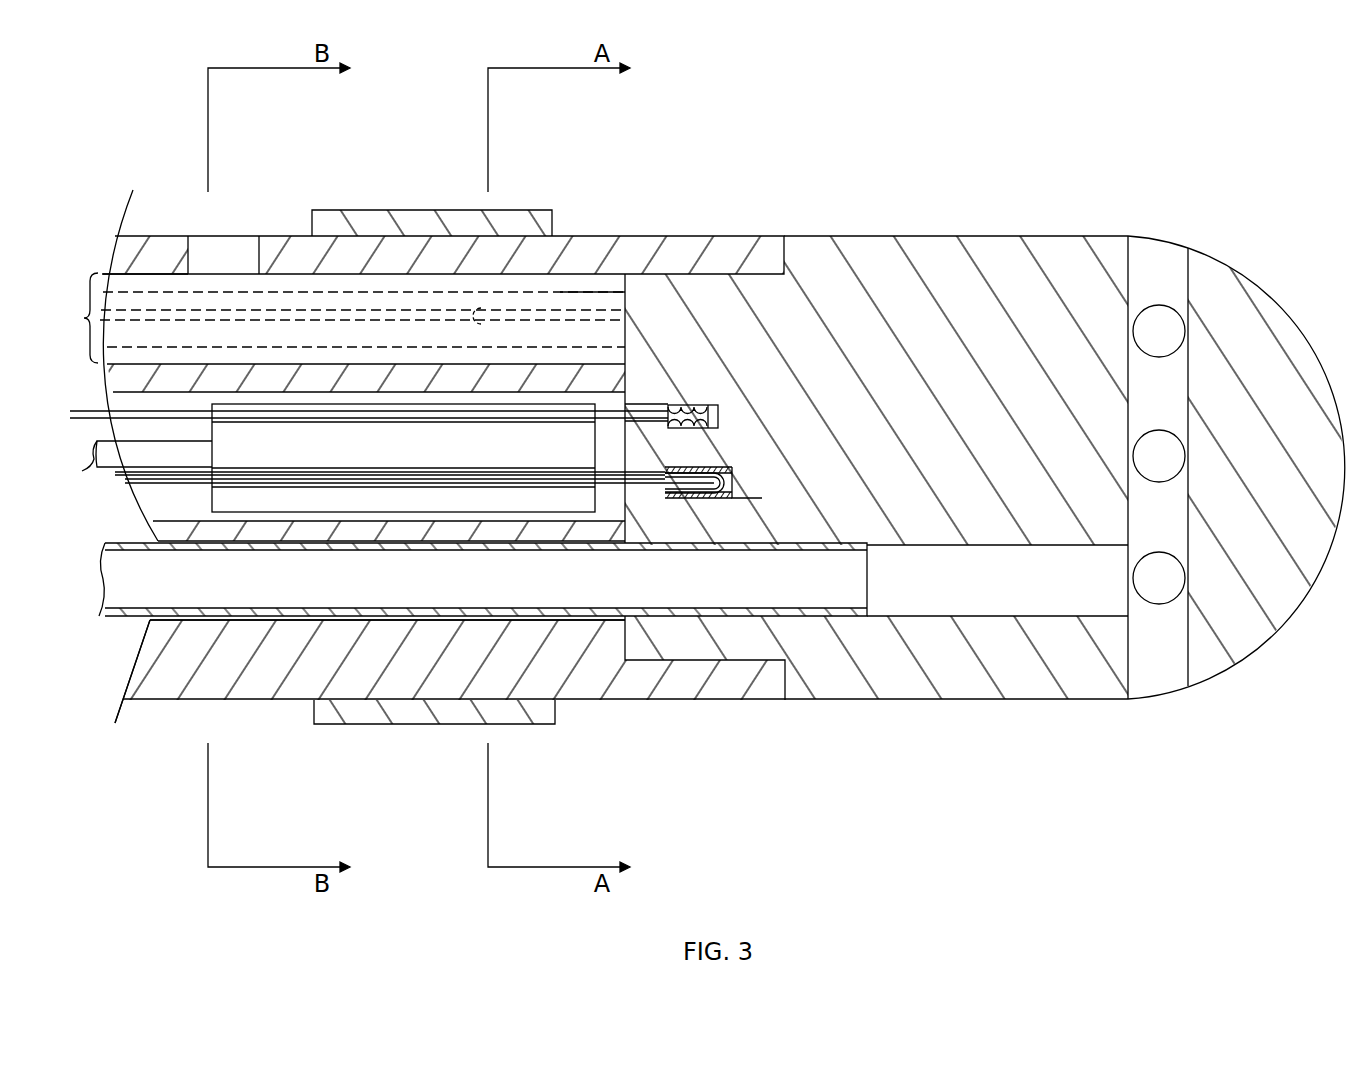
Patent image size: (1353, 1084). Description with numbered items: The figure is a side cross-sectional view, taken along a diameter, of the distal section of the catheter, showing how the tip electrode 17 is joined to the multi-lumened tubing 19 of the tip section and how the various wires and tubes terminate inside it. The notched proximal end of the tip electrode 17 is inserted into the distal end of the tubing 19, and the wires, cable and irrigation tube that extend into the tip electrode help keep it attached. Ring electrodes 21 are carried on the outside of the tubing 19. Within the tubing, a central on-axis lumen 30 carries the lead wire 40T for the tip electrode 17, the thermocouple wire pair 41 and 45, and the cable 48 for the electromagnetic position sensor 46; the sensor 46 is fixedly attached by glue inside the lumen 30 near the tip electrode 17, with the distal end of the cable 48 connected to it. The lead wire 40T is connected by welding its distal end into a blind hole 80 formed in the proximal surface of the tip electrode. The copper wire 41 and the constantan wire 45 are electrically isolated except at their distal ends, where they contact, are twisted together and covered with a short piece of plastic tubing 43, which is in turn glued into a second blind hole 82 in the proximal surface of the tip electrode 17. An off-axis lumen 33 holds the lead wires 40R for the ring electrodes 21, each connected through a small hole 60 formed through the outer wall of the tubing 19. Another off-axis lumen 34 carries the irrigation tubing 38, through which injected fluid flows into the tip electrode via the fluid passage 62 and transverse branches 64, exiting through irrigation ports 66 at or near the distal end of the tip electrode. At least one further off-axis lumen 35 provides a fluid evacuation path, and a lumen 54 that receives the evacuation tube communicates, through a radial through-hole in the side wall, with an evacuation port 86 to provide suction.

The tip electrode 17 is at (866, 236).
The multi-lumened tubing 19 is at (691, 236).
The ring electrode 21 is at (525, 210).
The central on-axis lumen 30 is at (155, 515).
The off-axis lumen 33 is at (588, 292).
The off-axis lumen 34 is at (165, 620).
The off-axis lumen 35 is at (336, 318).
The irrigation tubing 38 is at (102, 578).
The lead wire for ring electrode 40R is at (413, 308).
The lead wire for tip electrode 40T is at (655, 405).
The thermocouple wire 41 is at (683, 467).
The plastic tubing 43 is at (685, 498).
The thermocouple wire 45 is at (698, 488).
The electromagnetic position sensor 46 is at (386, 456).
The cable 48 is at (97, 456).
The lumen 54 is at (161, 275).
The small hole 60 is at (490, 314).
The fluid passage 62 is at (991, 620).
The transverse branches 64 is at (1130, 250).
The irrigation ports 66 is at (1183, 247).
The blind hole 80 is at (712, 405).
The blind hole 82 is at (762, 498).
The evacuation port 86 is at (240, 248).